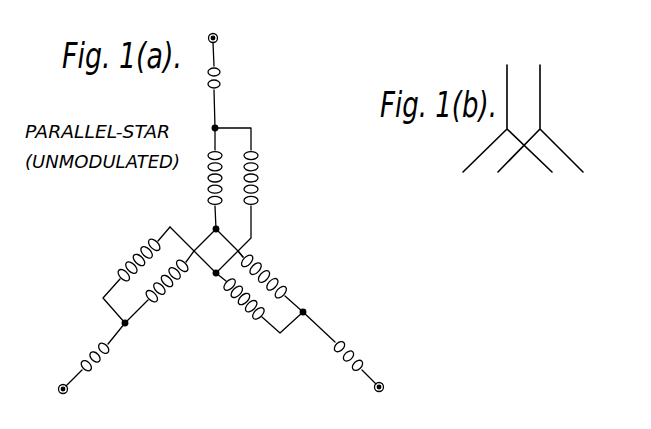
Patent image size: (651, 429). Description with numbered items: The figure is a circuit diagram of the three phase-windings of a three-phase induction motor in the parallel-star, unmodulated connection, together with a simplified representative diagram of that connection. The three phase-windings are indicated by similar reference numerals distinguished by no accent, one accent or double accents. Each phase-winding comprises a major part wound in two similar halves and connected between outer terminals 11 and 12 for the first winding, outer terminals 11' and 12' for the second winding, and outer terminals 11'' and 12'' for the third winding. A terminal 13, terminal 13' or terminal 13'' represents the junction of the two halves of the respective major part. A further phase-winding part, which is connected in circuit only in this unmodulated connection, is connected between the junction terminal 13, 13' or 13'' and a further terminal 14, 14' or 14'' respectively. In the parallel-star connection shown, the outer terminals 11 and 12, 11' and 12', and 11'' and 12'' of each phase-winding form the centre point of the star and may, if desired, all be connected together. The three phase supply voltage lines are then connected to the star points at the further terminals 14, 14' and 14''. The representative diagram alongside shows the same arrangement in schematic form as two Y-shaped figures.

The outer terminal 11 is at (205, 288).
The outer terminal 11' is at (203, 276).
The outer terminal 11'' is at (243, 288).
The outer terminal 12 is at (253, 229).
The outer terminal 12' is at (259, 229).
The outer terminal 12'' is at (286, 240).
The terminal 13 is at (223, 181).
The terminal 13' is at (277, 292).
The terminal 13'' is at (148, 288).
The further terminal 14 is at (230, 73).
The further terminal 14' is at (363, 356).
The further terminal 14'' is at (92, 369).